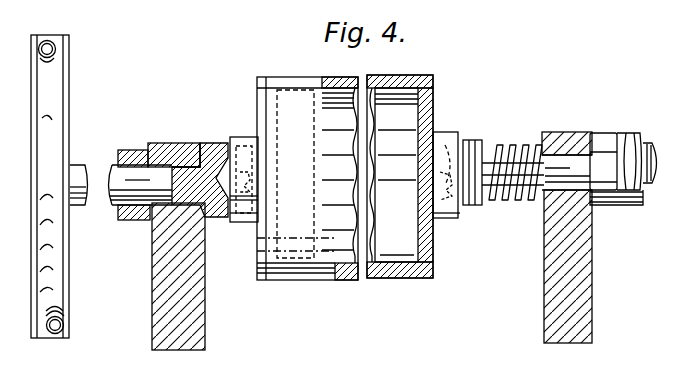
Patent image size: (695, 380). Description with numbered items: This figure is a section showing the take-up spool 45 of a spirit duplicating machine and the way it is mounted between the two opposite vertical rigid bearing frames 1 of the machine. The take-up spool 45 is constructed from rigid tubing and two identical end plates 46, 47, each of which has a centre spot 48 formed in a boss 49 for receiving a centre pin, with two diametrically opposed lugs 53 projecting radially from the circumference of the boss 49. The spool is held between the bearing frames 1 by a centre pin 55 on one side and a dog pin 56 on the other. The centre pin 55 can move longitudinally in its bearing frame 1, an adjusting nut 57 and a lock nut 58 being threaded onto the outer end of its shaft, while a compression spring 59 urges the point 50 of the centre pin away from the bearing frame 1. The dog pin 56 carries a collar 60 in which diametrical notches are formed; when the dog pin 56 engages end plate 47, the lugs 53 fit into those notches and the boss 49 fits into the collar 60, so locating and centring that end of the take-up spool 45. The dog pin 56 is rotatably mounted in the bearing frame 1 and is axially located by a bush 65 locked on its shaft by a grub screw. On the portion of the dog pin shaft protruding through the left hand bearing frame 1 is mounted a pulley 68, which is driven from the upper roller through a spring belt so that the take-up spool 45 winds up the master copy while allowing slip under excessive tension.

The bearing frame 1 is at (172, 145).
The take-up spool 45 is at (312, 72).
The end plate 46 is at (436, 106).
The end plate 47 is at (262, 271).
The centre spot 48 is at (258, 183).
The boss 49 is at (252, 214).
The point 50 is at (466, 140).
The lug 53 is at (246, 138).
The centre pin 55 is at (500, 158).
The dog pin 56 is at (108, 165).
The adjusting nut 57 is at (596, 134).
The lock nut 58 is at (626, 134).
The compression spring 59 is at (538, 150).
The collar 60 is at (214, 143).
The bush 65 is at (137, 150).
The pulley 68 is at (45, 124).